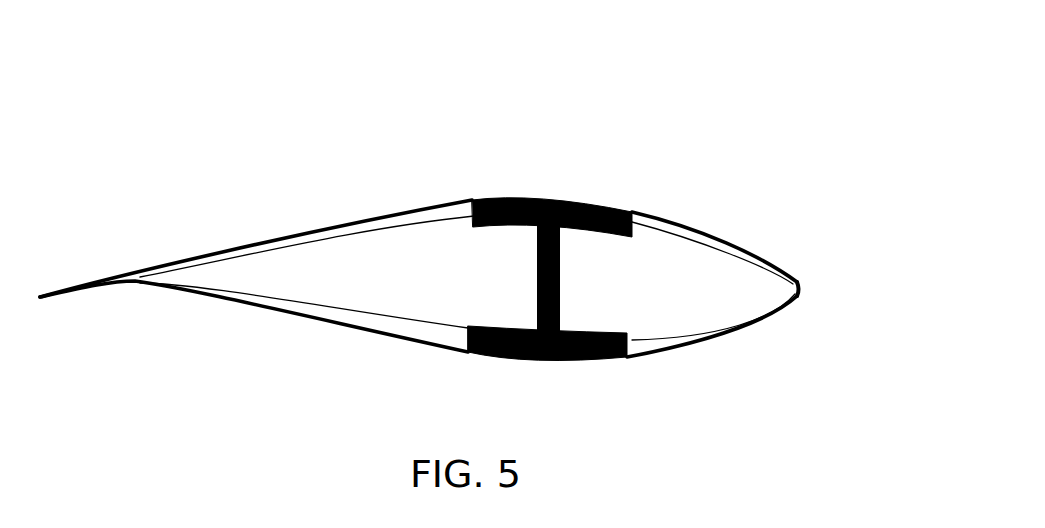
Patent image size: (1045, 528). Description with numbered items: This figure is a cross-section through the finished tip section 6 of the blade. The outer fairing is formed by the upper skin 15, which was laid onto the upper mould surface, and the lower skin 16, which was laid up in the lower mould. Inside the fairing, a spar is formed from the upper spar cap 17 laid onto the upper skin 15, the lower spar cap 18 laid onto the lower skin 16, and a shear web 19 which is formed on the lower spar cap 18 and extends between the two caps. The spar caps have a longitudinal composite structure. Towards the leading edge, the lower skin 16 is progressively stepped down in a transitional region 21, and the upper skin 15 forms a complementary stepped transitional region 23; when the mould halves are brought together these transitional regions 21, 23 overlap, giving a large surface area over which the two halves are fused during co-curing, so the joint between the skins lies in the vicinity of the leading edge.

The tip section 6 is at (487, 226).
The upper skin 15 is at (351, 217).
The lower skin 16 is at (398, 345).
The upper spar cap 17 is at (598, 200).
The lower spar cap 18 is at (612, 331).
The shear web 19 is at (561, 277).
The transitional region 21 is at (800, 288).
The transitional region 23 is at (781, 284).